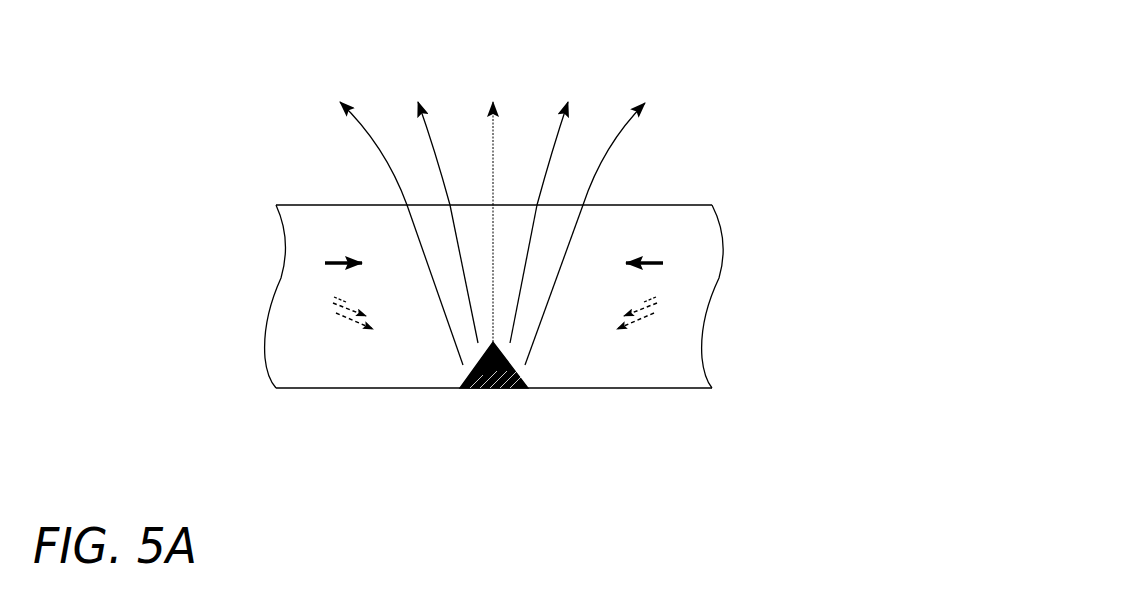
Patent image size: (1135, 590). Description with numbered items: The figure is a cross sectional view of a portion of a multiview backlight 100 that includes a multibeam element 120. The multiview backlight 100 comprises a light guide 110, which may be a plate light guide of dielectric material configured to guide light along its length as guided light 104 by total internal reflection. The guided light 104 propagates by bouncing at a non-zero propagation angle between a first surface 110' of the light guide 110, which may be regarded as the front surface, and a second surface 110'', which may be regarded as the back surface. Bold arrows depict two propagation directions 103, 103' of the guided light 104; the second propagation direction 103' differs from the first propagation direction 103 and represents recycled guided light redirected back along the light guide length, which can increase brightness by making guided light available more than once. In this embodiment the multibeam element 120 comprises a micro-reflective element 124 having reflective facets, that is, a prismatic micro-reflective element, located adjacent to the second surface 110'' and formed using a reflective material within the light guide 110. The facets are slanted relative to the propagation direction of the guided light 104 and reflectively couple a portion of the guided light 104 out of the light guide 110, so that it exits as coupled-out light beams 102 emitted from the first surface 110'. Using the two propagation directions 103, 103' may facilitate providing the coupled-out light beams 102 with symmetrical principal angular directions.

The multiview backlight 100 is at (828, 57).
The coupled-out light beams 102 is at (667, 113).
The propagation direction 103 is at (283, 222).
The another propagation direction 103' is at (715, 187).
The guided light 104 is at (322, 322).
The light guide 110 is at (548, 299).
The first surface 110' is at (540, 175).
The second surface 110'' is at (542, 420).
The multibeam element 120 is at (378, 192).
The micro-reflective element 124 is at (425, 413).